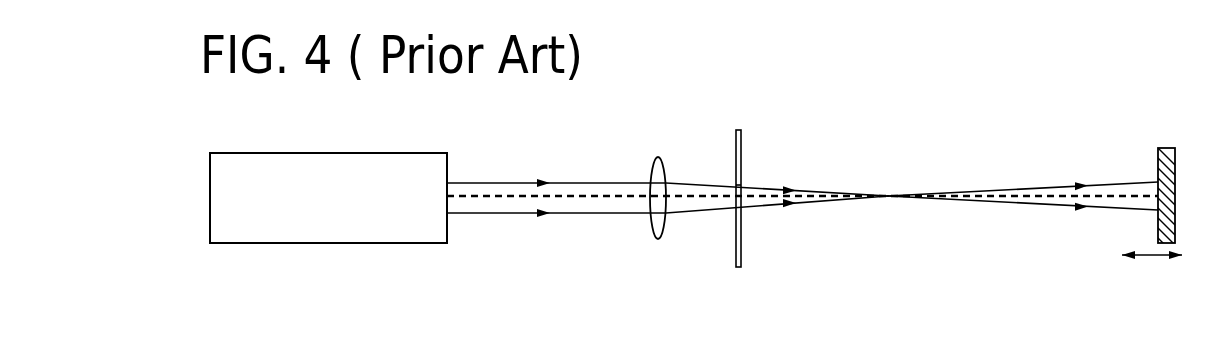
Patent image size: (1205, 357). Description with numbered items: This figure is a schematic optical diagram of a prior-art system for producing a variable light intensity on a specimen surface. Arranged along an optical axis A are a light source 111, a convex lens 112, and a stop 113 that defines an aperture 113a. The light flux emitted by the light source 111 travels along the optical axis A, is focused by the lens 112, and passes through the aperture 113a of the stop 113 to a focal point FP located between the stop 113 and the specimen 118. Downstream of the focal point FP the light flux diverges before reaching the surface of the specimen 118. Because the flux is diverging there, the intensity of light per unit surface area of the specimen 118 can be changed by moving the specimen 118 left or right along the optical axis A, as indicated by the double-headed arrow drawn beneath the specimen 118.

The light source 111 is at (410, 153).
The optical axis A is at (507, 198).
The convex lens 112 is at (657, 157).
The stop 113 is at (741, 142).
The aperture 113a is at (741, 187).
The focal point FP is at (913, 198).
The specimen 118 is at (1167, 148).